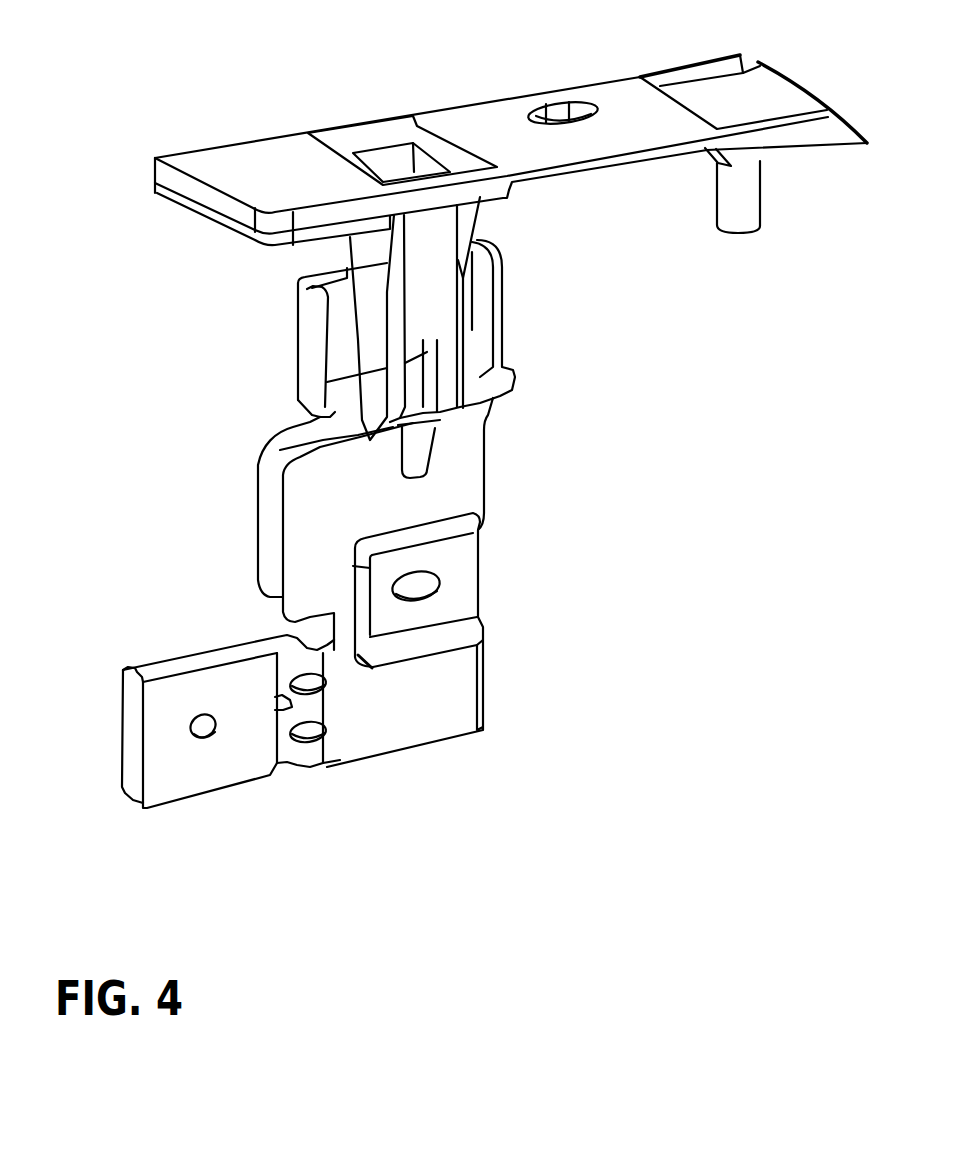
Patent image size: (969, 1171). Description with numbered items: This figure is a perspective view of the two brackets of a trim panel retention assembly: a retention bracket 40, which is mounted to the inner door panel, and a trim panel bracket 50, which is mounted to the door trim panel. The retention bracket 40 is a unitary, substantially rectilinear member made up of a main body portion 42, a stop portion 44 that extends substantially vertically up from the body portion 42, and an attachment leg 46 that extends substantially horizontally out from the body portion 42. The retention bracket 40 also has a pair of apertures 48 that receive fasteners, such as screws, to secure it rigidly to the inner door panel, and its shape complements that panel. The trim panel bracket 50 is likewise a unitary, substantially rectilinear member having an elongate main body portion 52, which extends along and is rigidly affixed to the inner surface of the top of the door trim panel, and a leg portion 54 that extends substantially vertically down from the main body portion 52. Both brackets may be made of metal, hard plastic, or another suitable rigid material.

The retention bracket 40 is at (293, 400).
The main body portion 42 is at (490, 428).
The stop portion 44 is at (293, 341).
The attachment leg 46 is at (128, 722).
The aperture 48 is at (440, 588).
The trim panel bracket 50 is at (257, 133).
The main body portion 52 is at (498, 113).
The leg portion 54 is at (377, 252).